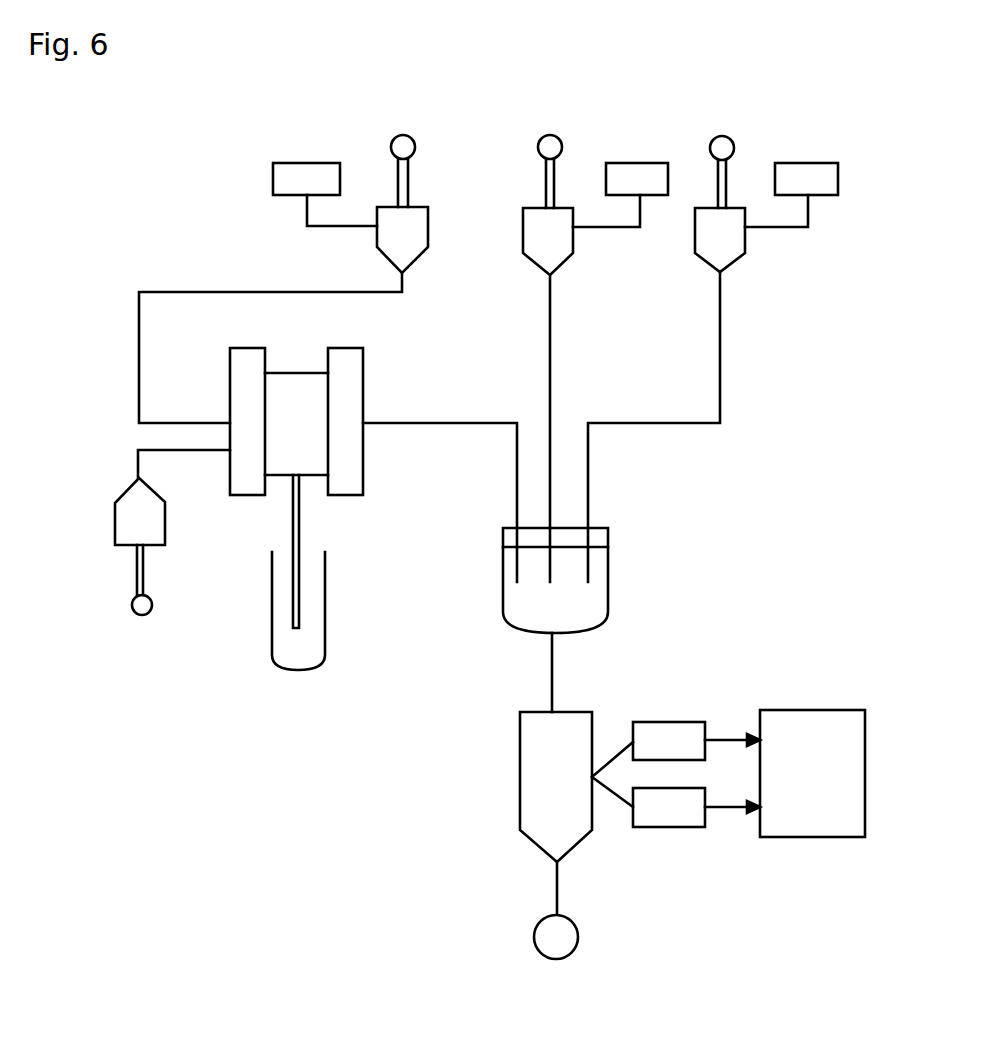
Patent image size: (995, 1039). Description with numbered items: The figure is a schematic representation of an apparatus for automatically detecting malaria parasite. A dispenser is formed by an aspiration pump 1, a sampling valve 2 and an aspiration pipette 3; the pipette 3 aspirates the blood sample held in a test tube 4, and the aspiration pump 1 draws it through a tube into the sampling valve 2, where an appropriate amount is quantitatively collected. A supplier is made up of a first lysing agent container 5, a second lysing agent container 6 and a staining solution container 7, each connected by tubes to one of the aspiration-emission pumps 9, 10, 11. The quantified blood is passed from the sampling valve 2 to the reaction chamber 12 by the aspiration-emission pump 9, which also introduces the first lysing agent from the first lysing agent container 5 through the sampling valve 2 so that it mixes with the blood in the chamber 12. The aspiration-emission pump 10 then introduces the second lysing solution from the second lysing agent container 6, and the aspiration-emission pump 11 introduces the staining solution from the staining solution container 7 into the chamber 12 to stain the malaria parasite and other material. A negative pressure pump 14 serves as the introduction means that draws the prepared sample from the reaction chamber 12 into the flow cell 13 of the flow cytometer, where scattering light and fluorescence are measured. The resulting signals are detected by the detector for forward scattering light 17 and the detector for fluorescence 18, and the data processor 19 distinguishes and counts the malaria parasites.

The aspiration pump 1 is at (150, 535).
The sampling valve 2 is at (307, 468).
The aspiration pipette 3 is at (287, 528).
The test tube 4 is at (313, 635).
The first lysing agent container 5 is at (308, 160).
The second lysing agent container 6 is at (630, 160).
The staining solution container 7 is at (802, 160).
The aspiration-emission pump 9 is at (415, 237).
The aspiration-emission pump 10 is at (562, 248).
The aspiration-emission pump 11 is at (735, 248).
The reaction chamber 12 is at (595, 598).
The flow cell 13 is at (527, 763).
The negative pressure pump 14 is at (565, 940).
The detector for forward scattering light 17 is at (667, 722).
The detector for fluorescence 18 is at (672, 828).
The data processor 19 is at (810, 710).